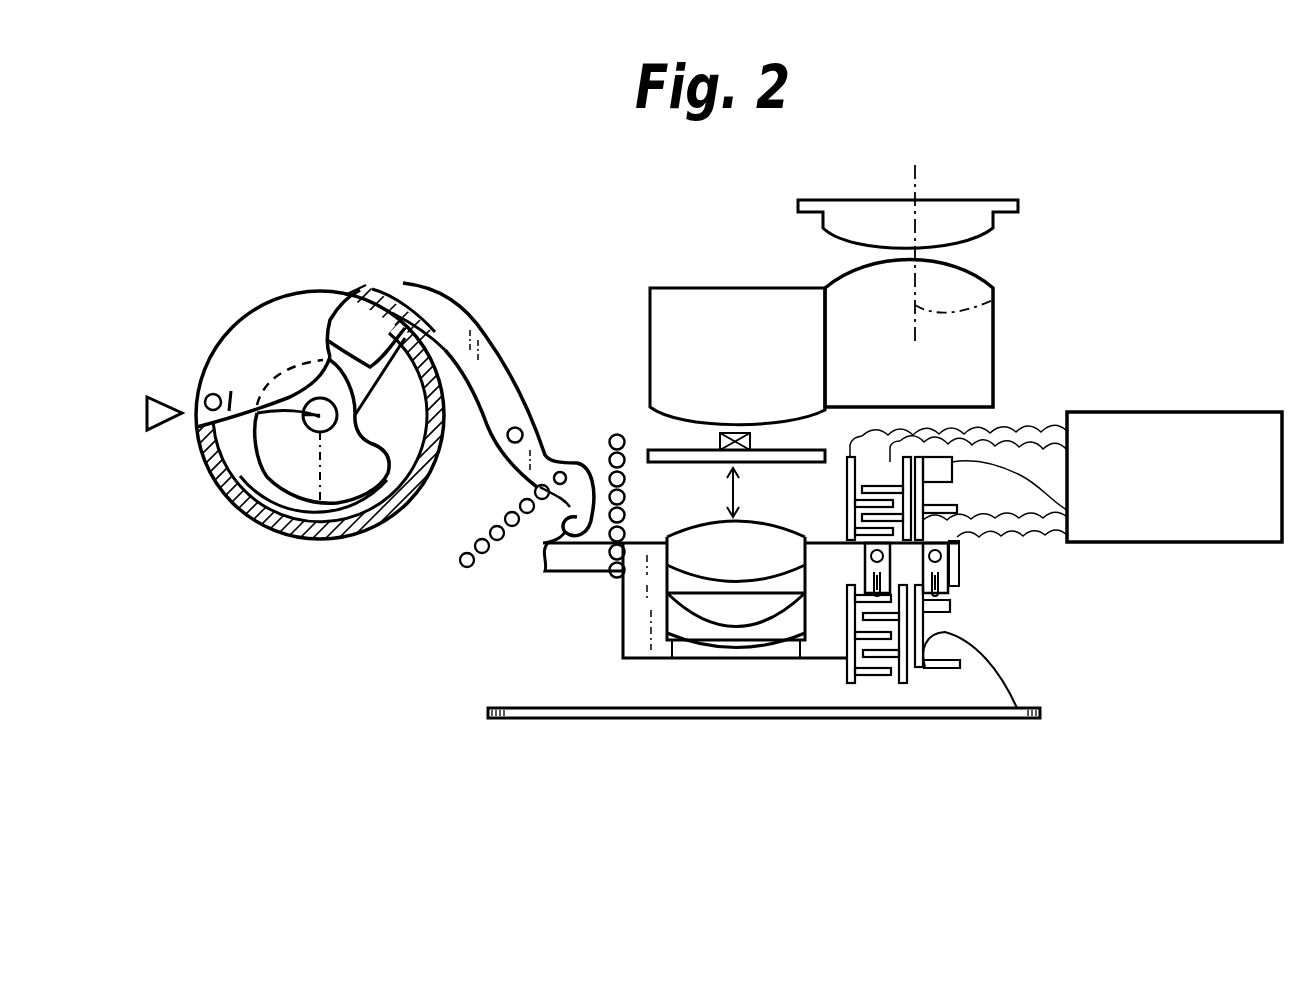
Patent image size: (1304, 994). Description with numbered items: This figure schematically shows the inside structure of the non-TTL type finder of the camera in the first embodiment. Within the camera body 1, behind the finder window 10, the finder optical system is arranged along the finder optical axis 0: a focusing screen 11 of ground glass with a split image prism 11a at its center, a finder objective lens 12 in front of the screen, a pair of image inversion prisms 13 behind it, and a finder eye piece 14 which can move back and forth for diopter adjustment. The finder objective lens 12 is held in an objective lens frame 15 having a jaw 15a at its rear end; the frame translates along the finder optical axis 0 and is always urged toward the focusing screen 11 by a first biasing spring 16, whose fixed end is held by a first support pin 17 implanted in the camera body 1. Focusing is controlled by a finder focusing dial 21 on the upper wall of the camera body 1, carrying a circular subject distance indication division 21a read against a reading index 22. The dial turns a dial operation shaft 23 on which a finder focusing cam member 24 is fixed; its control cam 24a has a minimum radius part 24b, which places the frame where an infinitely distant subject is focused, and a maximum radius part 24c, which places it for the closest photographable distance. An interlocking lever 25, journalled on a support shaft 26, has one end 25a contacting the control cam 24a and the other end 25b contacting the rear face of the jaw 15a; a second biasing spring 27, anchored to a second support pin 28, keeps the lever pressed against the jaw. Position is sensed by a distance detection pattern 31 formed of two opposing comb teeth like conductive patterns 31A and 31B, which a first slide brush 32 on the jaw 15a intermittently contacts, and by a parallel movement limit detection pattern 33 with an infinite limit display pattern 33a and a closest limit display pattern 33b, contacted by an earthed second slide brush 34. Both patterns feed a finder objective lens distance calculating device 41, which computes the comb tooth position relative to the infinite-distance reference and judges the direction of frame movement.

The camera body 1 is at (577, 718).
The finder window 10 is at (762, 712).
The focusing screen 11 is at (657, 452).
The split image prism 11a is at (731, 433).
The finder objective lens 12 is at (752, 633).
The image inversion prisms 13 is at (850, 300).
The finder eye piece 14 is at (957, 205).
The objective lens frame 15 is at (830, 633).
The jaw 15a is at (963, 562).
The first biasing spring 16 is at (600, 570).
The first support pin 17 is at (616, 436).
The finder focusing dial 21 is at (260, 312).
The subject distance indication division 21a is at (223, 343).
The reading index 22 is at (152, 398).
The dial operation shaft 23 is at (260, 453).
The finder focusing cam member 24 is at (255, 507).
The control cam 24a is at (292, 525).
The minimum radius part 24b is at (397, 340).
The maximum radius part 24c is at (380, 535).
The interlocking lever 25 is at (450, 317).
The one end of interlocking lever 25a is at (348, 340).
The other end of interlocking lever 25b is at (560, 515).
The support shaft 26 is at (517, 425).
The second biasing spring 27 is at (533, 530).
The second support pin 28 is at (460, 562).
The finder optical axis 0 is at (993, 303).
The distance detection pattern 31 is at (867, 683).
The comb teeth like conductive pattern 31A is at (850, 467).
The comb teeth like conductive pattern 31B is at (905, 425).
The first slide brush 32 is at (1023, 717).
The movement limit detection pattern 33 is at (947, 630).
The infinite limit display pattern 33a is at (950, 500).
The closest limit display pattern 33b is at (953, 667).
The second slide brush 34 is at (937, 575).
The finder objective lens distance calculating device 41 is at (1255, 505).